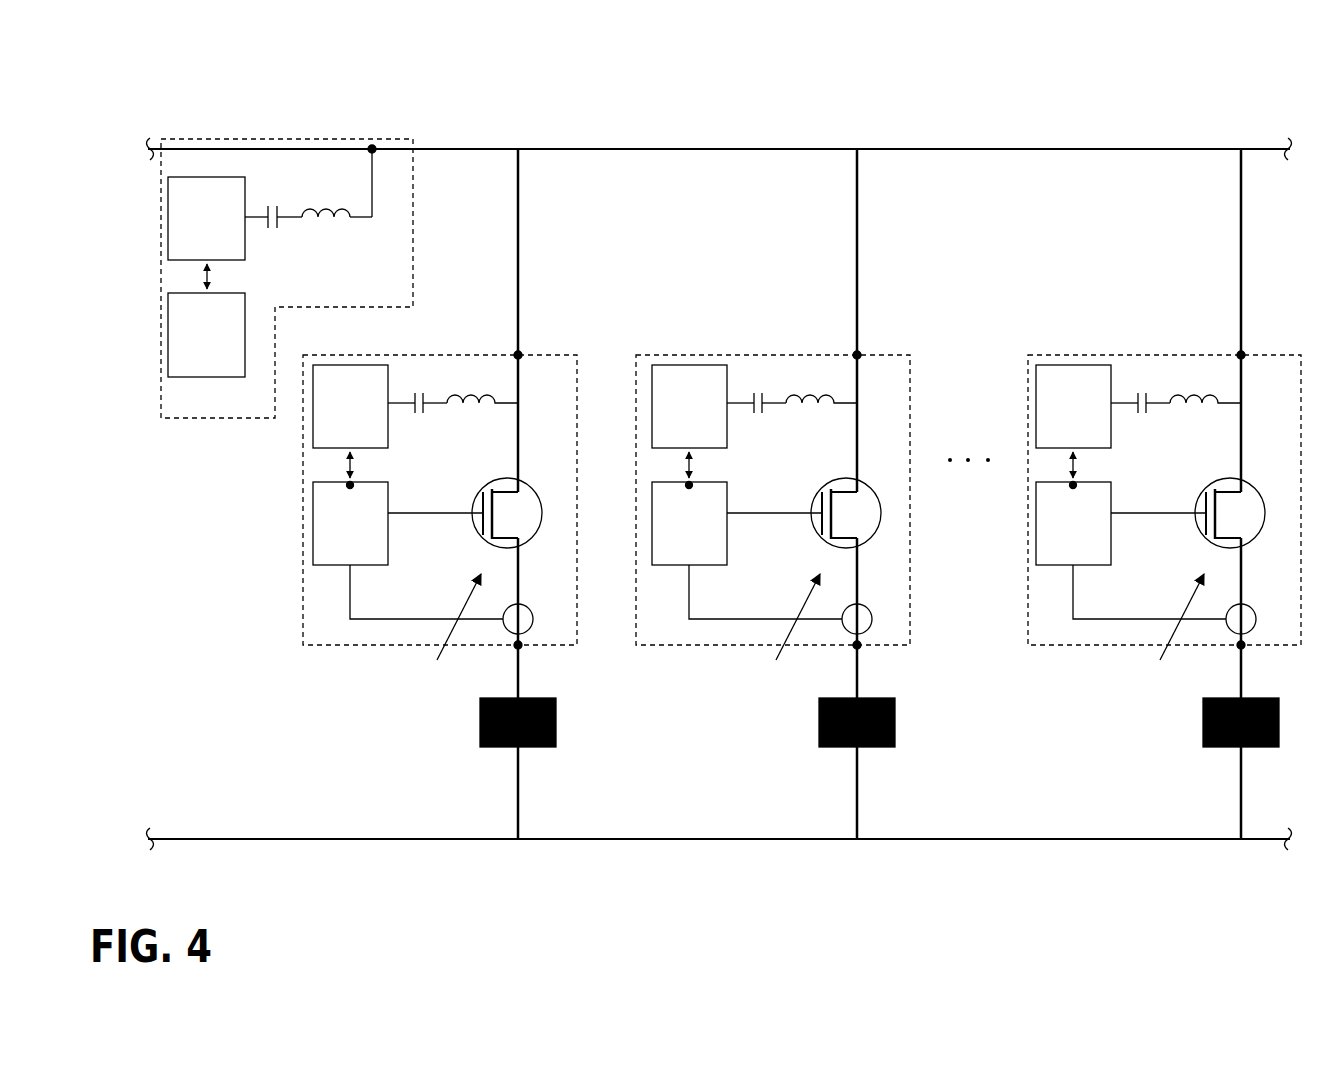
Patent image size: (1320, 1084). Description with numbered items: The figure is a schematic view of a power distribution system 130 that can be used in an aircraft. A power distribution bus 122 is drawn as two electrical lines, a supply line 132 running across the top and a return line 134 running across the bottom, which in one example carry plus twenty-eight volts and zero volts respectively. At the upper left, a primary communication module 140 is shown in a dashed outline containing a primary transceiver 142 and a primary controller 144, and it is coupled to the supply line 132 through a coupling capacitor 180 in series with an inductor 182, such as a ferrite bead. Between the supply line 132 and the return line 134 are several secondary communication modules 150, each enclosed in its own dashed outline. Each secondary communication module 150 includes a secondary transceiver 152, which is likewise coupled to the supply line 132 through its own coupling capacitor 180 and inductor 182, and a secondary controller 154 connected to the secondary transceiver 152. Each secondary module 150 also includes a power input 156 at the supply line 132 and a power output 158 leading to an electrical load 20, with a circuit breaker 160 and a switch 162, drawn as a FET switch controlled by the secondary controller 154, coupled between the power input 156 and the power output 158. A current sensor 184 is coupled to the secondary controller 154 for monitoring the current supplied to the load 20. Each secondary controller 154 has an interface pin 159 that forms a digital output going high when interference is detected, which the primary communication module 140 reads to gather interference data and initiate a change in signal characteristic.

The power distribution system 130 is at (1135, 66).
The supply line 132 is at (733, 147).
The power distribution bus 122 is at (841, 142).
The return line 134 is at (655, 842).
The primary communication module 140 is at (418, 173).
The primary transceiver 142 is at (206, 233).
The primary controller 144 is at (206, 335).
The coupling capacitor 180 is at (277, 220).
The inductor 182 is at (330, 203).
The secondary communication module 150 is at (802, 546).
The secondary transceiver 152 is at (712, 421).
The secondary controller 154 is at (769, 550).
The power input 156 is at (917, 494).
The power output 158 is at (917, 665).
The interface pin 159 is at (666, 511).
The circuit breaker 160 is at (805, 571).
The switch 162 is at (881, 494).
The current sensor 184 is at (898, 598).
The electrical load 20 is at (879, 722).